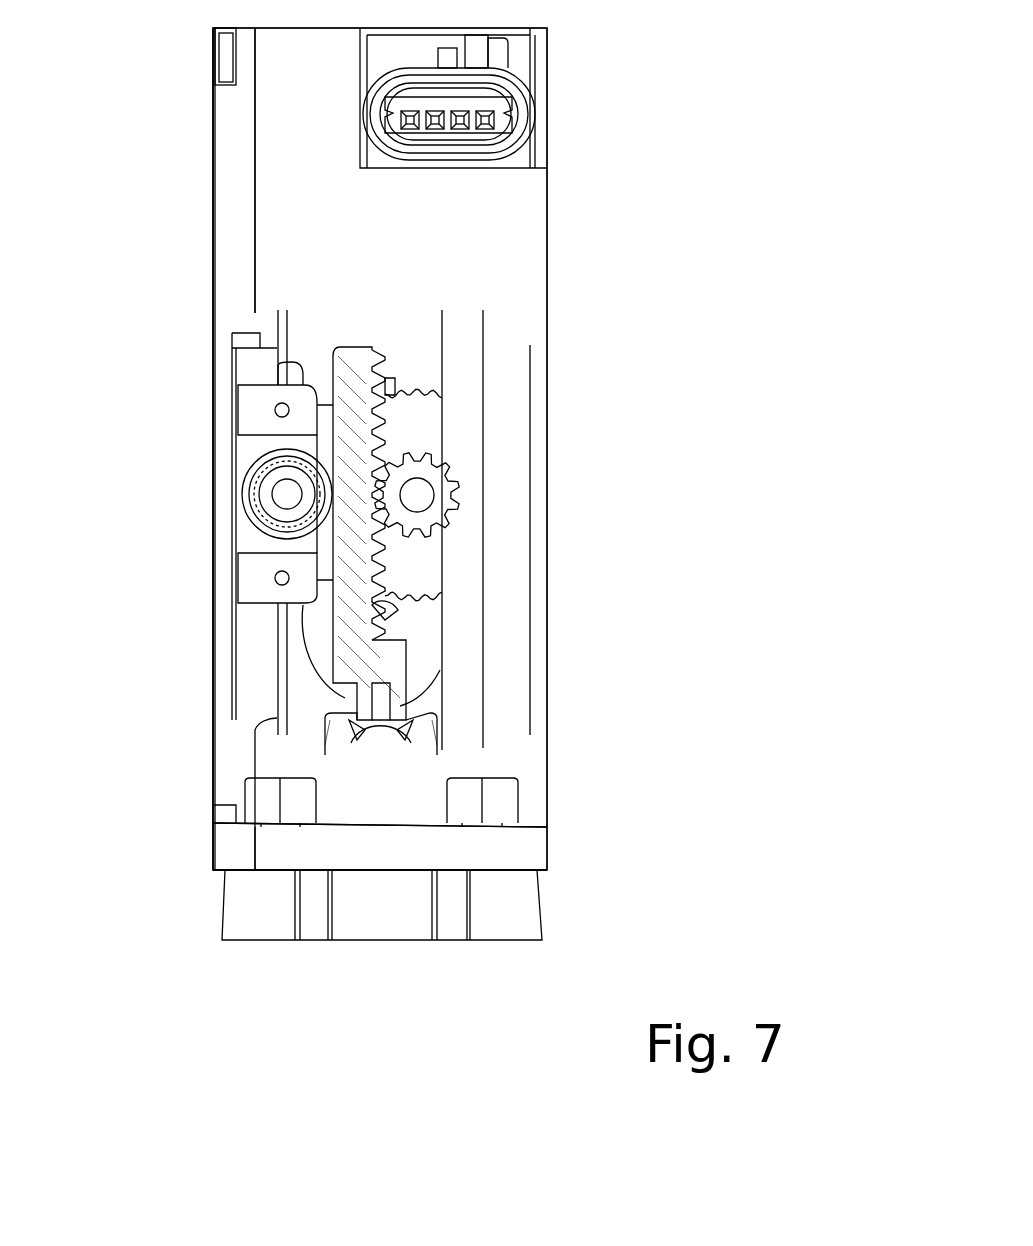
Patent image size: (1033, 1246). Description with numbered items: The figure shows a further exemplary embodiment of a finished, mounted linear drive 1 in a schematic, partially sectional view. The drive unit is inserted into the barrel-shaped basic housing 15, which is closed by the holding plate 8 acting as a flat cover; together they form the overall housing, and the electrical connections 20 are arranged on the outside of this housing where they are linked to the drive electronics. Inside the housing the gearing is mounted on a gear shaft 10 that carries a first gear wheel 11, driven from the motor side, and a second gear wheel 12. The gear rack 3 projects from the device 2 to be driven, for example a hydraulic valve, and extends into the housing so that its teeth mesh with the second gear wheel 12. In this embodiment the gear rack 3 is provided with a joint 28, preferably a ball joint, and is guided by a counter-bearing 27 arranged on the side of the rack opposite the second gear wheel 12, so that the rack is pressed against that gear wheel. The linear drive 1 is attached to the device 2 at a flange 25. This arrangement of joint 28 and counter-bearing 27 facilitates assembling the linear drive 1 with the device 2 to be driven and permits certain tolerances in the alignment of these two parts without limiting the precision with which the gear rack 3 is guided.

The linear drive 1 is at (178, 151).
The device to be driven 2 is at (268, 958).
The gear rack 3 is at (350, 375).
The holding plate 8 is at (227, 219).
The gear shaft 10 is at (419, 493).
The first gear wheel 11 is at (422, 428).
The second gear wheel 12 is at (437, 510).
The basic housing 15 is at (523, 237).
The electrical connections 20 is at (512, 100).
The flange 25 is at (495, 875).
The counter-bearing 27 is at (262, 525).
The joint 28 is at (413, 750).